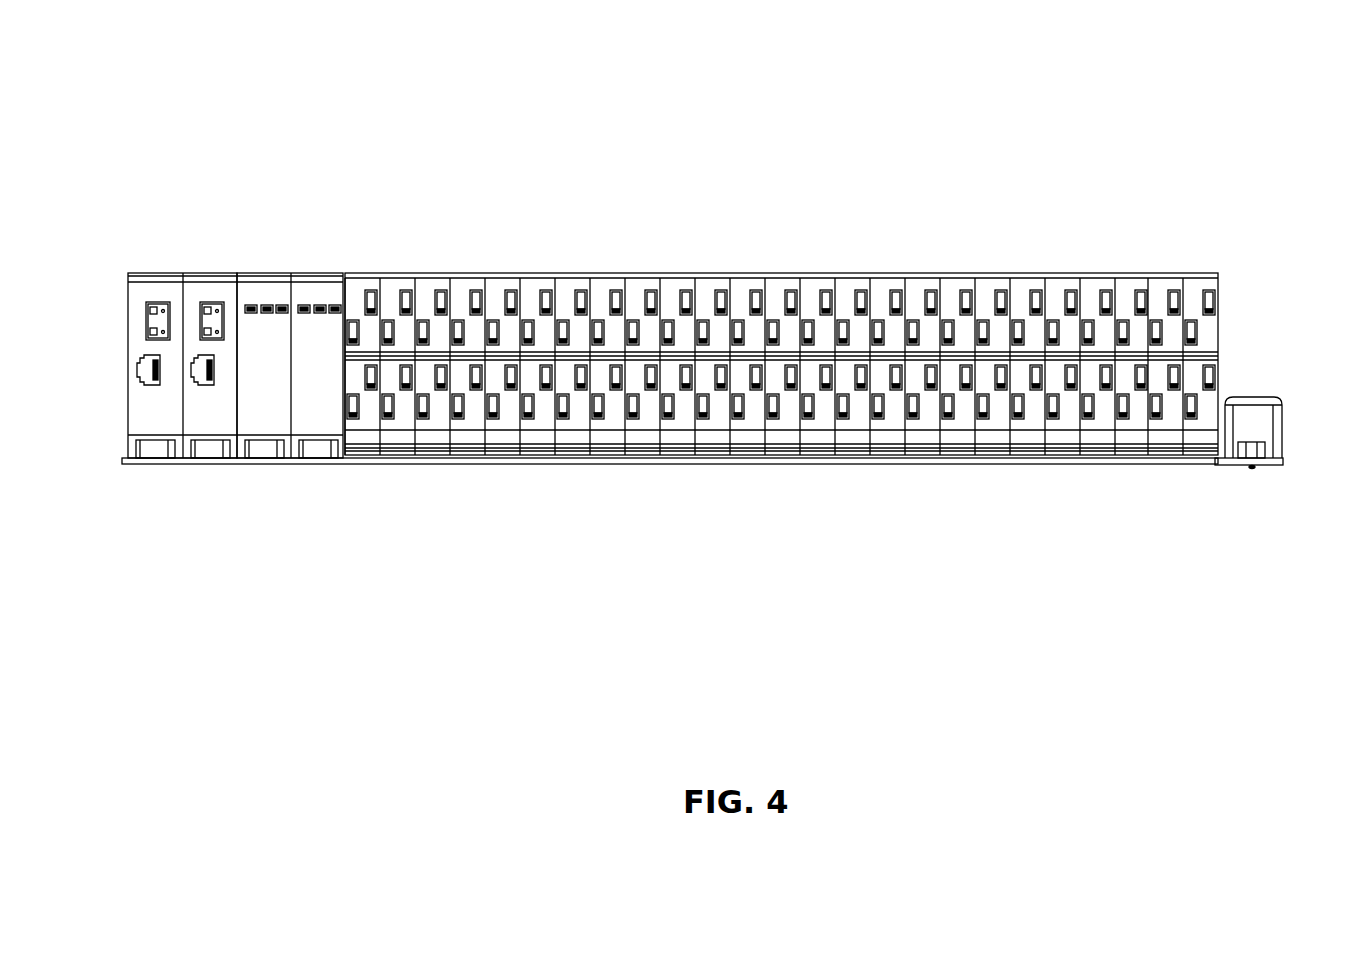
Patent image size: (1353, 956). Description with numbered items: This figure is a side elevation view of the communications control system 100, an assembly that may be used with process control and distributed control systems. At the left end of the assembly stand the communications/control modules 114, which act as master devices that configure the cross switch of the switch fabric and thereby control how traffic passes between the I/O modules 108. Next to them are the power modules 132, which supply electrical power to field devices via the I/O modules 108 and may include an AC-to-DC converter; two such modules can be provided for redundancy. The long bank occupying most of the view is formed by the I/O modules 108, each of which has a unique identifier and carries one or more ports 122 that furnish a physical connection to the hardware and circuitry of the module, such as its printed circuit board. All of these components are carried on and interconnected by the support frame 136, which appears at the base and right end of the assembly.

The communications control system 100 is at (1157, 92).
The I/O module 108 is at (507, 273).
The communications/control module 114 is at (205, 275).
The port 122 is at (793, 298).
The power module 132 is at (276, 275).
The support frame 136 is at (1232, 468).